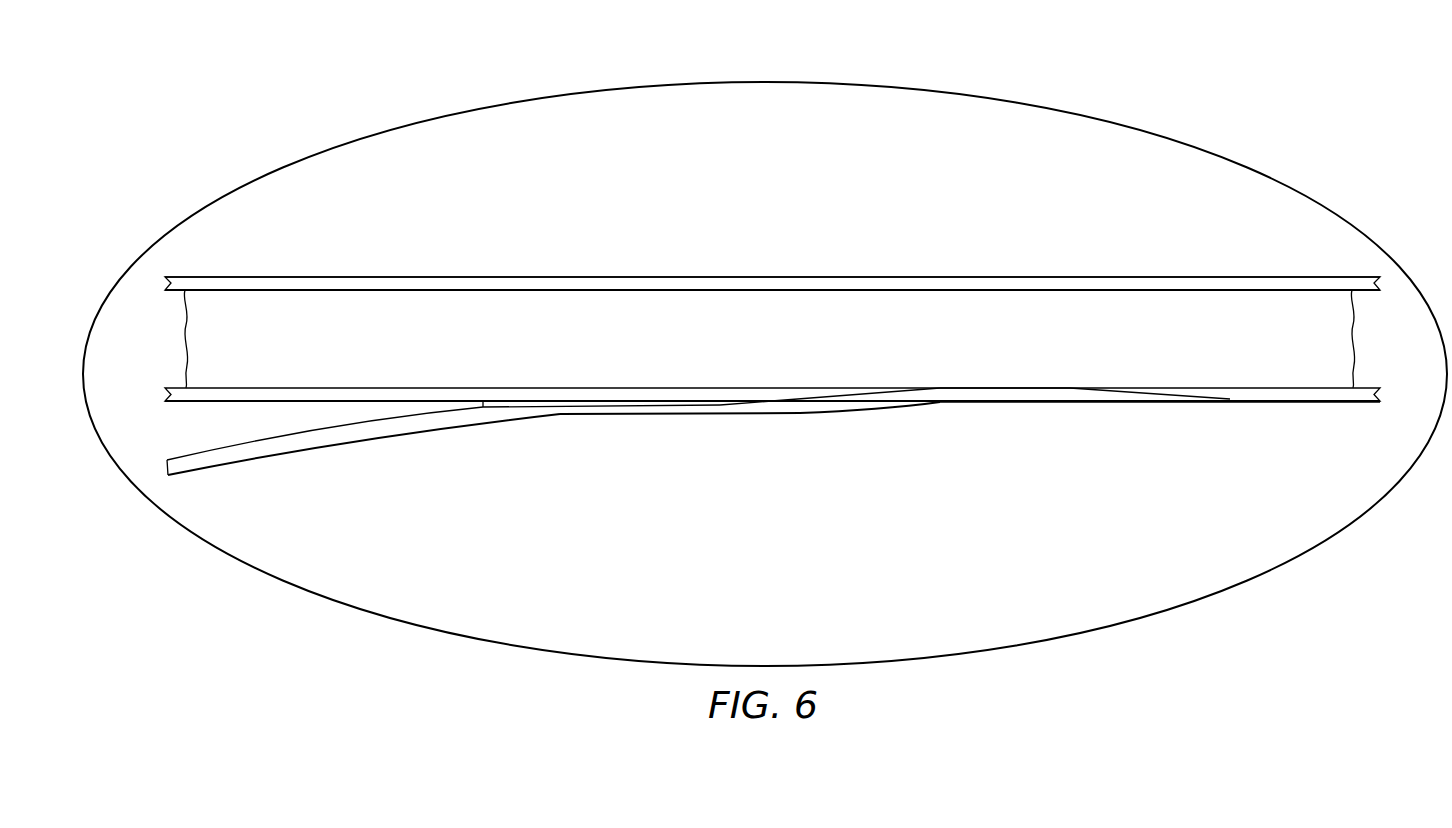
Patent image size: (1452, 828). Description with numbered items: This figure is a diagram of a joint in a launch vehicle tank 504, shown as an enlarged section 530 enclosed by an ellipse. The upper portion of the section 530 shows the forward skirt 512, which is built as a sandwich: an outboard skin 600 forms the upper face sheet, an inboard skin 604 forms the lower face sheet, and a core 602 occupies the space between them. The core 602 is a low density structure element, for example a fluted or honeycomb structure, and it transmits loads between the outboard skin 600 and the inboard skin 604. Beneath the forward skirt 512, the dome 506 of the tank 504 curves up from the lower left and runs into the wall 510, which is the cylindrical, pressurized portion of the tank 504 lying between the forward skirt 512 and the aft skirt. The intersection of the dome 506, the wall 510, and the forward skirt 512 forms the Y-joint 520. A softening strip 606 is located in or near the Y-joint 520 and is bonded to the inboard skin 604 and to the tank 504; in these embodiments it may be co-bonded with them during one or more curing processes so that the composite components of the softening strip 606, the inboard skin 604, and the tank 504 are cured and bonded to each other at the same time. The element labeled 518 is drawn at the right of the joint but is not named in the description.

The section 530 is at (602, 87).
The outboard skin 600 is at (472, 276).
The forward skirt 512 is at (604, 276).
The core 602 is at (1230, 352).
The inboard skin 604 is at (167, 393).
The softening strip 606 is at (495, 404).
The dome 506 is at (315, 447).
The Y-joint 520 is at (750, 414).
The wall 510 is at (930, 403).
The end portion 518 is at (1068, 402).
The tank 504 is at (789, 583).